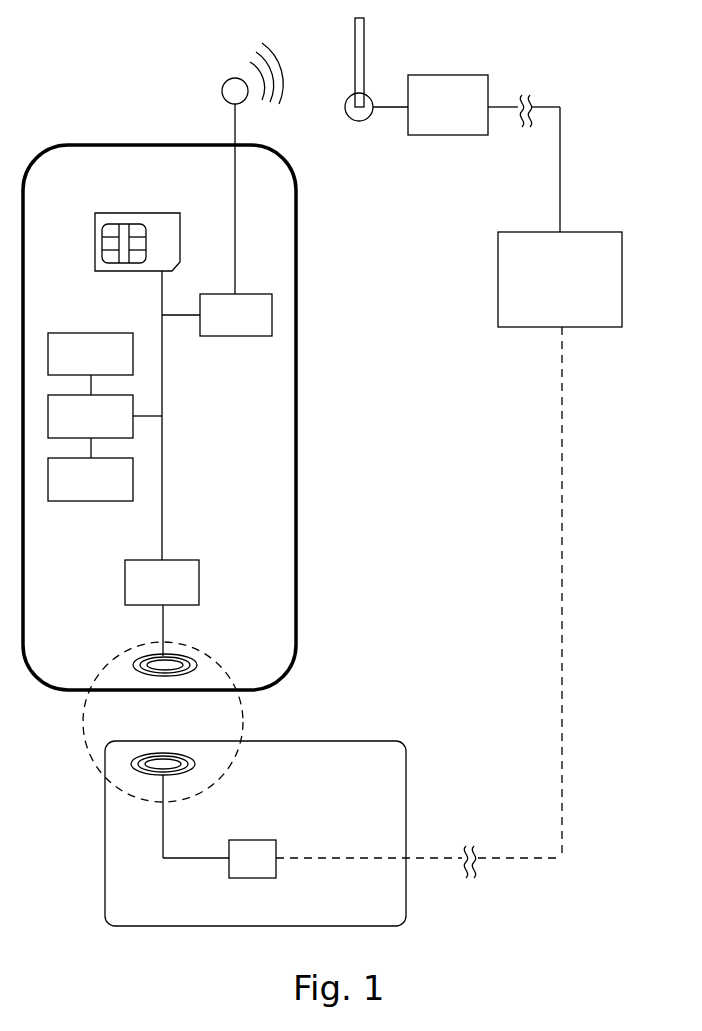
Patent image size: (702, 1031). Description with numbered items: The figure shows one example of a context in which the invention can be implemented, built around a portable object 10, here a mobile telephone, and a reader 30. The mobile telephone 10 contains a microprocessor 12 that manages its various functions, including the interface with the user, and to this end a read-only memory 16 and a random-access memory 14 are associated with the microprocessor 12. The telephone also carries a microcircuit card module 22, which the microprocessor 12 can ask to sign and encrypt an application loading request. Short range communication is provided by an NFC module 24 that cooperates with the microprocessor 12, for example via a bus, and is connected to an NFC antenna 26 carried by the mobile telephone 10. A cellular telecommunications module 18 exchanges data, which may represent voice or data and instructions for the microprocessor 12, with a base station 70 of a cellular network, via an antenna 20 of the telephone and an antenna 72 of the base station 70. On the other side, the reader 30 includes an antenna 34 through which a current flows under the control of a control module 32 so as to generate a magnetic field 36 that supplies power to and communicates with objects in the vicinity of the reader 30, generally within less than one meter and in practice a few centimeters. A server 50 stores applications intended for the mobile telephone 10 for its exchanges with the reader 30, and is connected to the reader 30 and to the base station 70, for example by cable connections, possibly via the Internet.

The portable object 10 is at (318, 454).
The microprocessor 12 is at (105, 426).
The random-access memory 14 is at (90, 479).
The read-only memory 16 is at (90, 364).
The cellular telecommunications module 18 is at (217, 315).
The antenna 20 is at (225, 84).
The microcircuit card module 22 is at (144, 213).
The NFC module 24 is at (162, 608).
The NFC antenna 26 is at (133, 660).
The reader 30 is at (433, 758).
The control module 32 is at (395, 859).
The antenna 34 is at (186, 758).
The magnetic field 36 is at (244, 725).
The server 50 is at (470, 294).
The base station 70 is at (452, 65).
The antenna 72 is at (365, 38).